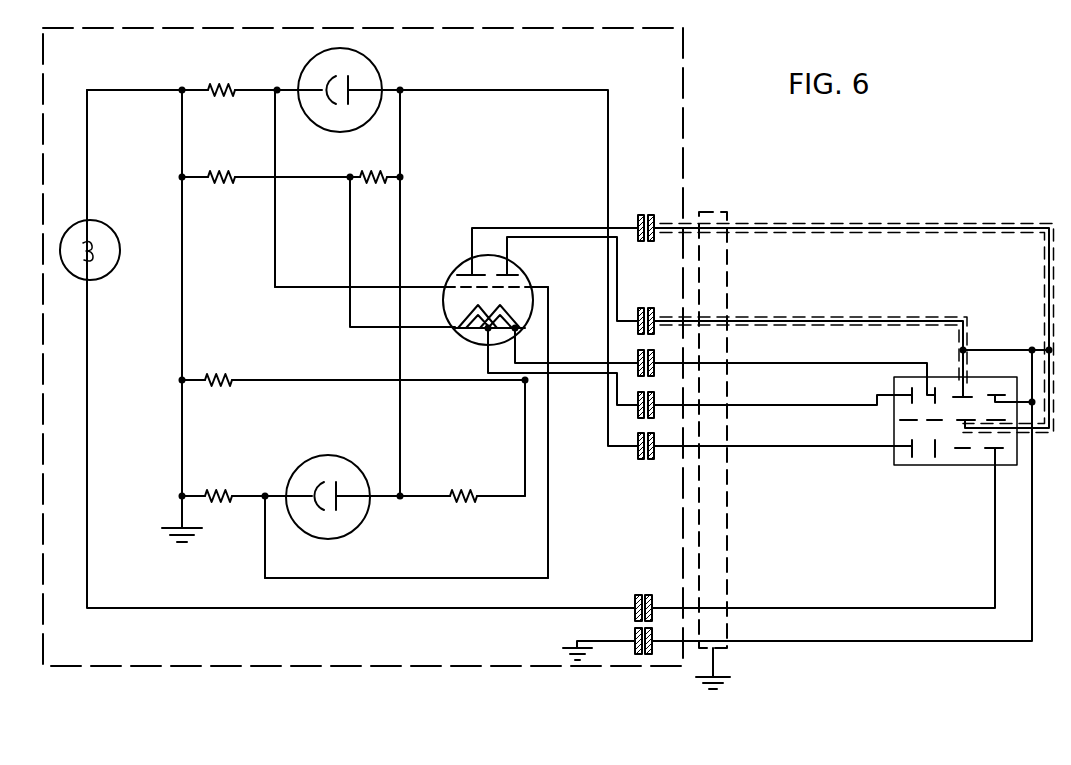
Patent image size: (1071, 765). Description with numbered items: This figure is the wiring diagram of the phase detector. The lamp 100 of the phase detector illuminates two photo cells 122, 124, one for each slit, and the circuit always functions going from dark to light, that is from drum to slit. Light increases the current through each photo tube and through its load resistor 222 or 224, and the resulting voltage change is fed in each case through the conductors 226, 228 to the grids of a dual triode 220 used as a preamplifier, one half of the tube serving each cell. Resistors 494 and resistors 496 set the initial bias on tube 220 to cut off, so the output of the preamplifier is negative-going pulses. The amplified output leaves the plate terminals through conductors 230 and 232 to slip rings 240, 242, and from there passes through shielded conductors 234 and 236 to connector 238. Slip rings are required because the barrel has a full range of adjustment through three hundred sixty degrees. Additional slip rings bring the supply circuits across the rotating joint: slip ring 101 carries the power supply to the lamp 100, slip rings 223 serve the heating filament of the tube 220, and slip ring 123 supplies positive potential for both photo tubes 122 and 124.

The lamp 100 is at (98, 224).
The slip ring 101 is at (645, 596).
The photo cell 122 is at (362, 63).
The slip ring 123 is at (648, 462).
The photo cell 124 is at (360, 530).
The dual triode 220 is at (452, 272).
The load resistor 222 is at (230, 84).
The slip rings 223 is at (650, 378).
The load resistor 224 is at (226, 510).
The conductor 226 is at (294, 290).
The conductor 228 is at (549, 486).
The conductor 230 is at (565, 227).
The conductor 232 is at (570, 250).
The shielded conductor 234 is at (902, 229).
The shielded conductor 236 is at (905, 318).
The connector 238 is at (949, 467).
The slip ring 240 is at (647, 212).
The slip ring 242 is at (647, 307).
The resistors 494 is at (372, 190).
The resistors 496 is at (222, 190).